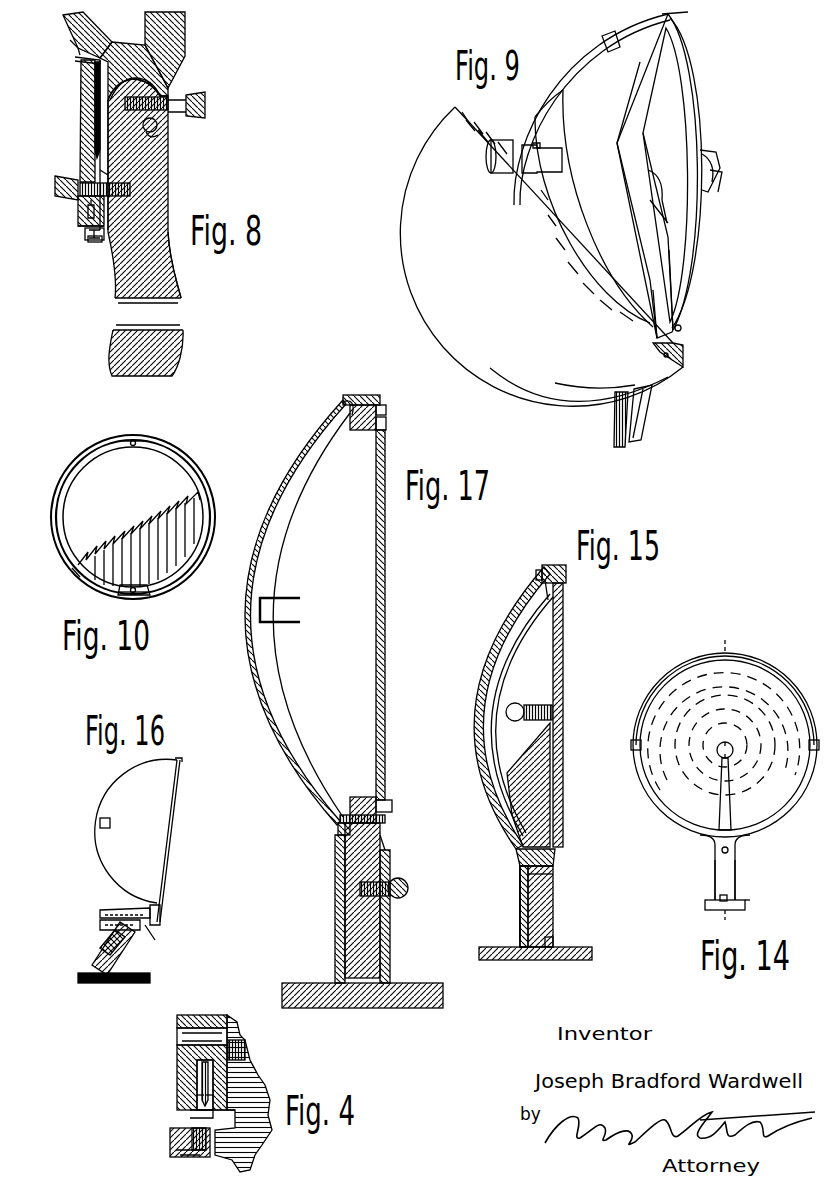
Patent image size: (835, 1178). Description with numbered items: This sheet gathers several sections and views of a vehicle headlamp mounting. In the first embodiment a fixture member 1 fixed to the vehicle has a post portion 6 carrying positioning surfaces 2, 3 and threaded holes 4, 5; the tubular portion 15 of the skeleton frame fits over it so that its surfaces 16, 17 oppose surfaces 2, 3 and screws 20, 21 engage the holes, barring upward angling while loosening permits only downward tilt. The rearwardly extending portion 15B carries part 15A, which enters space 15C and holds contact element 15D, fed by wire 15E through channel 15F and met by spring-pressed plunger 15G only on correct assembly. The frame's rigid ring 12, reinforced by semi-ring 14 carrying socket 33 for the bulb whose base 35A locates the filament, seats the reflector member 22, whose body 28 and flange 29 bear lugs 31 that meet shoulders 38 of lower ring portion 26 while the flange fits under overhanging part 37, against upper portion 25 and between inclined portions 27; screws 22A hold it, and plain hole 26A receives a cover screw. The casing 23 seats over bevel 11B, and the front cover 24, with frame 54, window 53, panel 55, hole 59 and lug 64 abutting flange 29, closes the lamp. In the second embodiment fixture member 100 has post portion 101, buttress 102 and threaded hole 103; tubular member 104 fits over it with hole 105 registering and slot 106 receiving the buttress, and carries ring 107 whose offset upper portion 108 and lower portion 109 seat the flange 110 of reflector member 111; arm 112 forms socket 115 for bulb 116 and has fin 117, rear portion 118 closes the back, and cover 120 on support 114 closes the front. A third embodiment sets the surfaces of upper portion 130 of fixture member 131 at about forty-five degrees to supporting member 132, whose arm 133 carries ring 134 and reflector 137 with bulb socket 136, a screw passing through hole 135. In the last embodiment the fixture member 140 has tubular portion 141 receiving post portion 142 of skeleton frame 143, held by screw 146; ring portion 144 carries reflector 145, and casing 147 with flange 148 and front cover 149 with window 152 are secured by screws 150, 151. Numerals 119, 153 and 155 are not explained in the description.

In FIG. 8, the fixture member 1 is at (68, 225).
In FIG. 8, the upper positioning surface 2 is at (150, 135).
In FIG. 8, the lower positioning surface 3 is at (106, 175).
In FIG. 8, the threaded hole 4 is at (162, 96).
In FIG. 8, the threaded hole 5 is at (132, 198).
In FIG. 8, the post portion 6 is at (169, 190).
In FIG. 4, the post portion 6 is at (252, 1145).
In FIG. 8, the bevel 11B is at (86, 62).
In FIG. 9, the rigid ring 12 is at (657, 291).
In FIG. 8, the rigid semi-ring 14 is at (86, 19).
In FIG. 9, the rigid semi-ring 14 is at (565, 55).
In FIG. 8, the tubular portion 15 is at (86, 110).
In FIG. 9, the tubular portion 15 is at (633, 416).
In FIG. 14, the tubular portion 15 is at (725, 784).
In FIG. 4, the tubular portion 15 is at (178, 1062).
In FIG. 4, the upwardly extending part 15A is at (230, 1118).
In FIG. 8, the rearwardly extending portion 15B is at (96, 243).
In FIG. 4, the rearwardly extending portion 15B is at (172, 1135).
In FIG. 4, the space 15C is at (197, 1110).
In FIG. 4, the electric contact element 15D is at (195, 1117).
In FIG. 4, the insulated wire 15E is at (180, 1152).
In FIG. 8, the channel 15F is at (86, 238).
In FIG. 4, the channel 15F is at (192, 1140).
In FIG. 4, the spring-pressed contact plunger 15G is at (200, 1113).
In FIG. 8, the positioning surface 16 is at (157, 128).
In FIG. 8, the positioning surface 17 is at (86, 180).
In FIG. 8, the screw 20 is at (206, 116).
In FIG. 8, the screw 21 is at (58, 195).
In FIG. 9, the reflector member 22 is at (594, 208).
In FIG. 9, the screws 22A is at (660, 52).
In FIG. 9, the casing 23 is at (541, 256).
In FIG. 10, the front cover 24 is at (184, 442).
In FIG. 9, the upper portion of the ring 25 is at (624, 95).
In FIG. 8, the lower portion of the ring 26 is at (186, 44).
In FIG. 9, the lower portion of the ring 26 is at (706, 238).
In FIG. 9, the plain hole 26A is at (682, 329).
In FIG. 9, the inclined portions 27 is at (716, 135).
In FIG. 9, the reflecting body 28 is at (665, 175).
In FIG. 9, the flange 29 is at (706, 88).
In FIG. 9, the lugs 31 is at (655, 166).
In FIG. 9, the socket 33 is at (505, 140).
In FIG. 9, the base of the main bulb member 35A is at (553, 139).
In FIG. 9, the overhanging part 37 is at (690, 12).
In FIG. 9, the shoulders 38 is at (661, 186).
In FIG. 10, the window 53 is at (168, 565).
In FIG. 10, the frame 54 is at (70, 565).
In FIG. 10, the inwardly extending panel 55 is at (150, 596).
In FIG. 10, the plain hole 59 is at (118, 598).
In FIG. 10, the lug 64 is at (128, 441).
In FIG. 15, the integral fixture member 100 is at (593, 954).
In FIG. 14, the integral fixture member 100 is at (742, 903).
In FIG. 15, the post portion 101 is at (554, 908).
In FIG. 15, the positioning buttress 102 is at (553, 940).
In FIG. 14, the positioning buttress 102 is at (712, 908).
In FIG. 15, the threaded hole 103 is at (540, 875).
In FIG. 15, the tubular member 104 is at (520, 898).
In FIG. 14, the tubular member 104 is at (736, 875).
In FIG. 14, the plain hole 105 is at (729, 851).
In FIG. 14, the slot 106 is at (718, 896).
In FIG. 14, the rigid ring 107 is at (672, 833).
In FIG. 14, the upper portion 108 is at (775, 662).
In FIG. 14, the lower portion 109 is at (777, 828).
In FIG. 15, the flange 110 is at (548, 600).
In FIG. 15, the reflector member 111 is at (522, 633).
In FIG. 14, the arm 112 is at (731, 795).
In FIG. 15, the support 114 is at (520, 860).
In FIG. 15, the socket 115 is at (537, 704).
In FIG. 14, the socket 115 is at (734, 752).
In FIG. 15, the bulb 116 is at (515, 702).
In FIG. 15, the fin 117 is at (530, 740).
In FIG. 15, the rear closing portion 118 is at (509, 598).
In FIG. 14, the reflector dashes 119 is at (806, 742).
In FIG. 15, the cover 120 is at (542, 565).
In FIG. 16, the upper portion 130 is at (130, 955).
In FIG. 16, the fixture member 131 is at (152, 977).
In FIG. 16, the supporting member 132 is at (145, 936).
In FIG. 16, the arm 133 is at (150, 925).
In FIG. 16, the reflector supporting ring 134 is at (164, 893).
In FIG. 16, the plain hole 135 is at (104, 946).
In FIG. 16, the bulb socket 136 is at (103, 828).
In FIG. 16, the reflector 137 is at (136, 831).
In FIG. 17, the fixture member 140 is at (300, 982).
In FIG. 17, the tubular portion 141 is at (338, 880).
In FIG. 17, the post portion 142 is at (382, 916).
In FIG. 17, the skeleton frame 143 is at (340, 835).
In FIG. 17, the plain ring portion 144 is at (366, 432).
In FIG. 17, the reflector 145 is at (286, 665).
In FIG. 17, the screw 146 is at (402, 884).
In FIG. 17, the casing 147 is at (304, 790).
In FIG. 17, the inturned flange 148 is at (348, 410).
In FIG. 17, the front cover 149 is at (387, 423).
In FIG. 17, the screw 150 is at (382, 402).
In FIG. 17, the screw 151 is at (386, 819).
In FIG. 17, the window 152 is at (377, 680).
In FIG. 17, the bracket 153 is at (290, 624).
In FIG. 8, the cap edge 155 is at (72, 44).